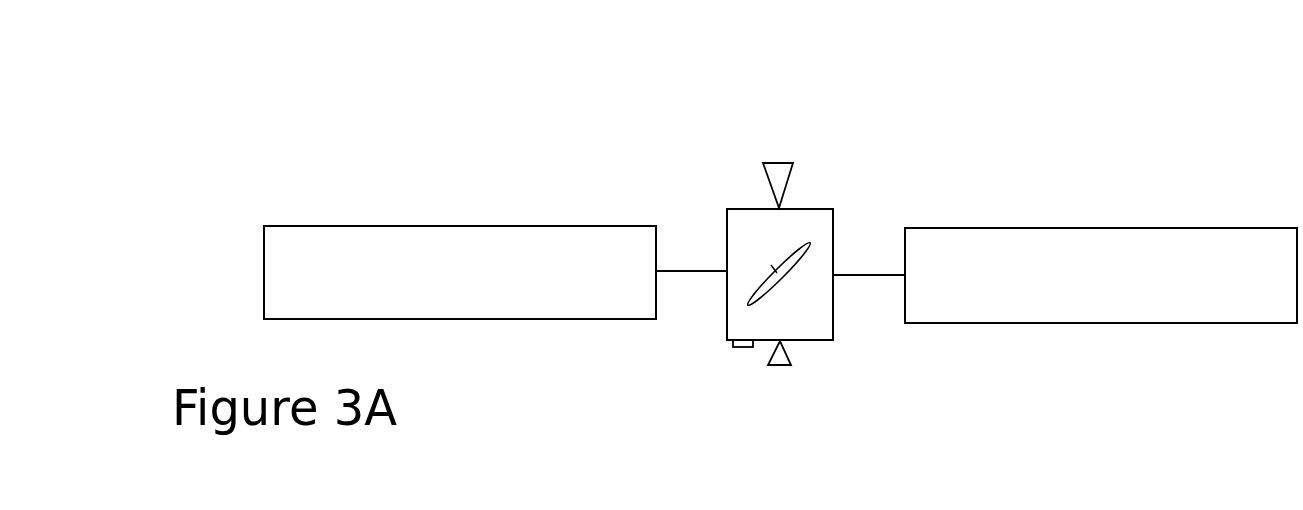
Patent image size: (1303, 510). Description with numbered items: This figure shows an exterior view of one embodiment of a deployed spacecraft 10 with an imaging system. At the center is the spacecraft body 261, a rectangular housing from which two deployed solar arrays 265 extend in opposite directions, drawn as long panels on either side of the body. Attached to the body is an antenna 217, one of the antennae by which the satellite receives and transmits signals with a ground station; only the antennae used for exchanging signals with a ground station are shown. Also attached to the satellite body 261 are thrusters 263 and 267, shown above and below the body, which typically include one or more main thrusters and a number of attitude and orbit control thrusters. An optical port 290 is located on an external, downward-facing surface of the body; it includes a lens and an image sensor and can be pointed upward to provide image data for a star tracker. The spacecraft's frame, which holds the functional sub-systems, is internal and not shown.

The spacecraft 10 is at (381, 113).
The antenna 217 is at (786, 262).
The spacecraft body 261 is at (823, 336).
The thruster 263 is at (793, 163).
The solar arrays 265 is at (643, 312).
The thruster 267 is at (781, 365).
The optical port 290 is at (740, 348).